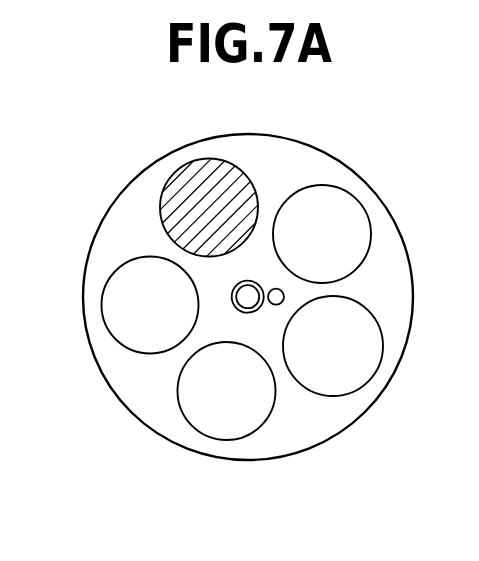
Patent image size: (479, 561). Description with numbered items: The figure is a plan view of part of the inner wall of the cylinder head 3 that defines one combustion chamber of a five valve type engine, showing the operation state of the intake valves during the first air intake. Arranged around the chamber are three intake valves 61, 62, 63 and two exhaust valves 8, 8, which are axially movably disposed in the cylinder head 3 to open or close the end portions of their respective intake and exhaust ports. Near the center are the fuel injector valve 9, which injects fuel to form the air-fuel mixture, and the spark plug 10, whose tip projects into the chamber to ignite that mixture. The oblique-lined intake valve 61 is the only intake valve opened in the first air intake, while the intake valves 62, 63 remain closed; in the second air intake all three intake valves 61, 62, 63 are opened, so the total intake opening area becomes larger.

The cylinder head 3 is at (265, 445).
The exhaust valve 8 is at (363, 203).
The fuel injector valve 9 is at (252, 281).
The spark plug 10 is at (272, 288).
The intake valve 61 is at (164, 193).
The intake valve 62 is at (117, 270).
The intake valve 63 is at (180, 411).